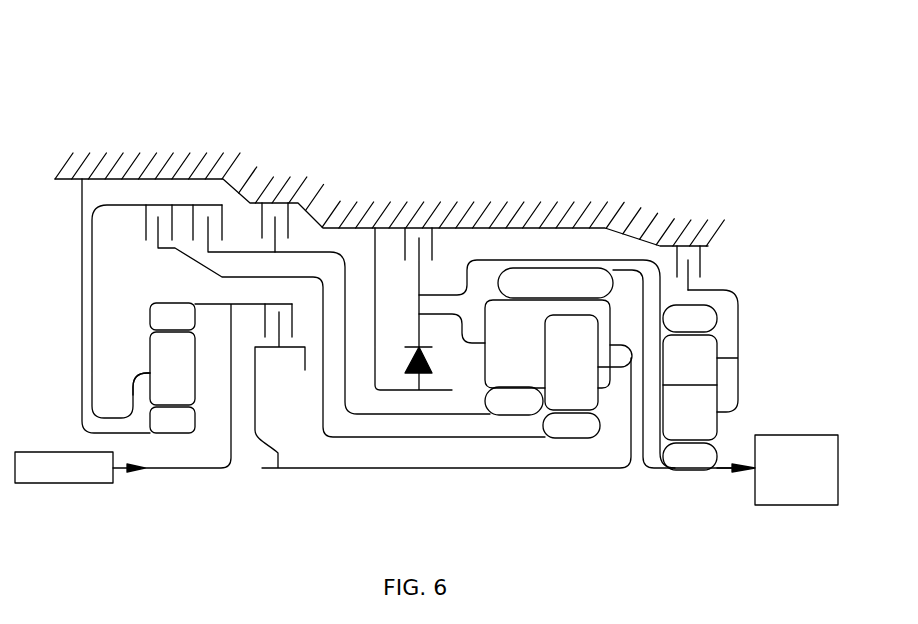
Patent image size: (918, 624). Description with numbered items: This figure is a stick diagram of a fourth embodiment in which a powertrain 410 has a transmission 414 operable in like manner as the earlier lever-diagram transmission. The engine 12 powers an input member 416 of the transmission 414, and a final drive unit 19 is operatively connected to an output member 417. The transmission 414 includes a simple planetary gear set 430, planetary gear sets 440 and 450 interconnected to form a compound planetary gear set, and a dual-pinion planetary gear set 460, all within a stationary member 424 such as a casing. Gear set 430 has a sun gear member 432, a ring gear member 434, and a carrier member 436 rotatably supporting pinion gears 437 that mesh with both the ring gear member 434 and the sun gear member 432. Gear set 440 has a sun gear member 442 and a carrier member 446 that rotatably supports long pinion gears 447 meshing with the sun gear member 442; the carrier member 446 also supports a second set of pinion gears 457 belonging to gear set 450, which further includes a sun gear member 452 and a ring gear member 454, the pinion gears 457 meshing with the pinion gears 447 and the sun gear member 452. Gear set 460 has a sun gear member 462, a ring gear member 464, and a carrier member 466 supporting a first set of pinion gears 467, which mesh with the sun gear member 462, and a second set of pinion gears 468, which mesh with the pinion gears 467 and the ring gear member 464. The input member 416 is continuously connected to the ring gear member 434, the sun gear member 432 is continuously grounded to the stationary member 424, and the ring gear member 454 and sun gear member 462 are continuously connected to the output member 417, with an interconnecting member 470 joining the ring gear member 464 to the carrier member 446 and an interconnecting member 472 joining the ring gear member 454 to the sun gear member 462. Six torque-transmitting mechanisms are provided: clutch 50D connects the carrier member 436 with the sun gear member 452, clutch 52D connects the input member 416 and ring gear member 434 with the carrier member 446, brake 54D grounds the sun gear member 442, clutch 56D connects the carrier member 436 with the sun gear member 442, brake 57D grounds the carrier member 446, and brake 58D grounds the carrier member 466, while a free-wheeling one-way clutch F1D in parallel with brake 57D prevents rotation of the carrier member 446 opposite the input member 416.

The powertrain 410 is at (299, 92).
The transmission 414 is at (402, 113).
The stationary member 424 is at (151, 153).
The torque-transmitting mechanism 56D is at (216, 242).
The torque-transmitting mechanism 54D is at (284, 242).
The torque-transmitting mechanism 57D is at (427, 265).
The torque-transmitting mechanism 58D is at (698, 275).
The torque-transmitting mechanism 50D is at (150, 250).
The torque-transmitting mechanism 52D is at (260, 348).
The free-wheeling one-way clutch F1D is at (398, 356).
The interconnecting member 470 is at (527, 258).
The carrier member 466 is at (742, 380).
The carrier member 446 is at (463, 341).
The interconnecting member 472 is at (641, 465).
The engine 12 is at (49, 484).
The final drive unit 19 is at (823, 435).
The input member 416 is at (118, 473).
The output member 417 is at (719, 472).
The simple planetary gear set 430 is at (173, 424).
The ring gear member 434 is at (172, 316).
The pinion gears 437 is at (172, 368).
The sun gear member 432 is at (172, 420).
The carrier member 436 is at (139, 375).
The planetary gear set 440 is at (549, 399).
The sun gear member 442 is at (514, 401).
The pinion gears 447 is at (547, 344).
The ring gear member 454 is at (555, 283).
The planetary gear set 450 is at (571, 423).
The sun gear member 452 is at (583, 457).
The pinion gears 457 is at (571, 362).
The dual-pinion planetary gear set 460 is at (690, 431).
The ring gear member 464 is at (690, 318).
The pinion gears 468 is at (690, 387).
The pinion gears 467 is at (688, 416).
The sun gear member 462 is at (684, 482).